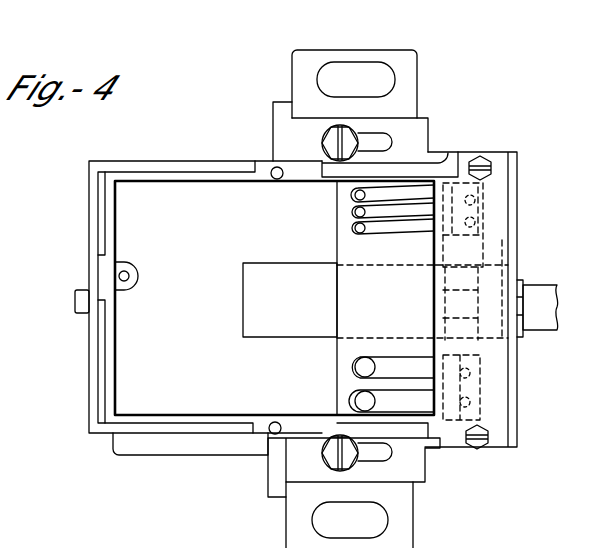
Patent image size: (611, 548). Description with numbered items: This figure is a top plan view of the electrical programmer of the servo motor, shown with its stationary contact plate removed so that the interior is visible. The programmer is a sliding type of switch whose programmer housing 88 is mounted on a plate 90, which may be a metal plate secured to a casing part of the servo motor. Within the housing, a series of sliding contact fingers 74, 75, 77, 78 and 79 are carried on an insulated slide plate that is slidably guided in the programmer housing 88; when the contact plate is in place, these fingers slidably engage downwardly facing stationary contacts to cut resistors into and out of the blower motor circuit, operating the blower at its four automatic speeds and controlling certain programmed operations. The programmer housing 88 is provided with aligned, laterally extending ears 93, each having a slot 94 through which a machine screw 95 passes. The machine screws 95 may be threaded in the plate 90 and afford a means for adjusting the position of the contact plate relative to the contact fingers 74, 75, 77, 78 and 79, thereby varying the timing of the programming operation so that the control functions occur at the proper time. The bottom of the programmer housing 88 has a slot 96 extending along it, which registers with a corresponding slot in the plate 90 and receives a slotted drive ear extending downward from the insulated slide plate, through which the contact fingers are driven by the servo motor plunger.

The sliding contact finger 74 is at (355, 401).
The sliding contact finger 75 is at (355, 366).
The sliding contact finger 77 is at (355, 229).
The sliding contact finger 78 is at (355, 211).
The sliding contact finger 79 is at (355, 196).
The programmer housing 88 is at (520, 198).
The plate 90 is at (242, 458).
The laterally extending ears 93 is at (430, 135).
The slot 94 is at (378, 140).
The machine screw 95 is at (330, 140).
The slot 96 is at (238, 305).